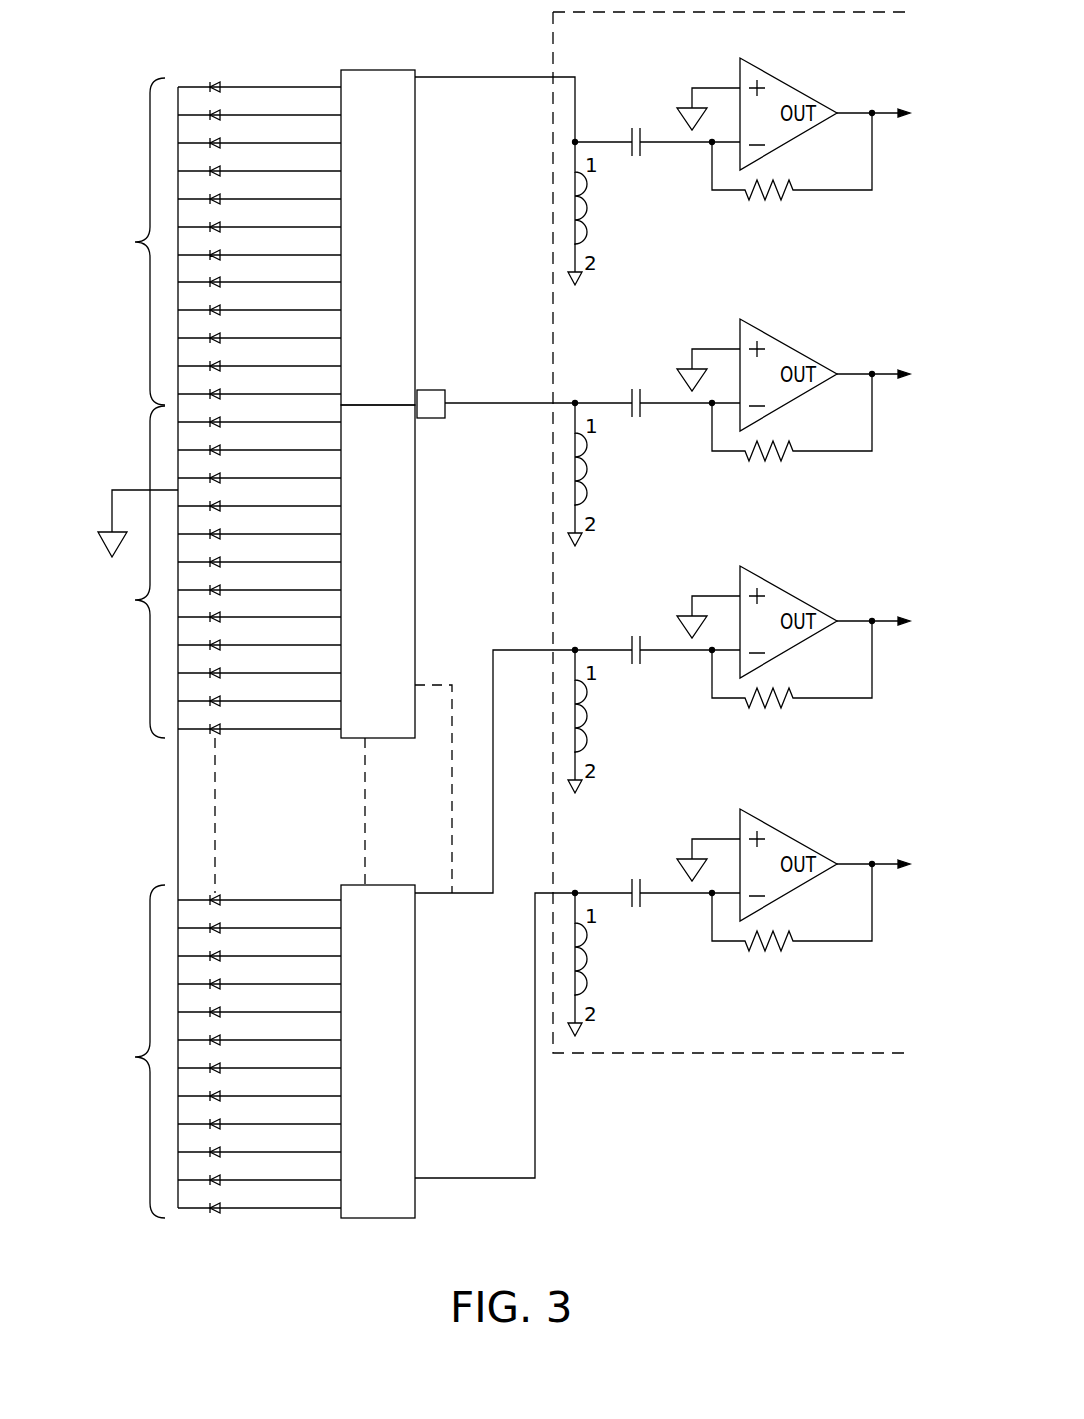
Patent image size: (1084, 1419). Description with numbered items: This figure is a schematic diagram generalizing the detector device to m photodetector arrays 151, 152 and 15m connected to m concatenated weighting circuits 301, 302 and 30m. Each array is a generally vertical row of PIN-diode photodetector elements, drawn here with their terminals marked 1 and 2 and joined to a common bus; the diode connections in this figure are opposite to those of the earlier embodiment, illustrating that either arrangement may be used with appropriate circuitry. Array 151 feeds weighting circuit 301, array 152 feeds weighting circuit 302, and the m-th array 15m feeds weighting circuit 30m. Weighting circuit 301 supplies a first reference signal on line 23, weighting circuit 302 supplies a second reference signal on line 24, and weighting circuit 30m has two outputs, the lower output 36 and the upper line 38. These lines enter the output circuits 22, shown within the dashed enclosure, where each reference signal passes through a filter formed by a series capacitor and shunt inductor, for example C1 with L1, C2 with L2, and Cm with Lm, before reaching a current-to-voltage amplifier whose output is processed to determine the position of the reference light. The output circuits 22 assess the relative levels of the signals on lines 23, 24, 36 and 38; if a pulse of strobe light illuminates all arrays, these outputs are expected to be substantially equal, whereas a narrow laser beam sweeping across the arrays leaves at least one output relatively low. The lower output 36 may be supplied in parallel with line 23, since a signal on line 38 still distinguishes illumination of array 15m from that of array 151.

The detector diode terminal 1 is at (259, 640).
The detector diode terminal 2 / common bus 2 is at (151, 638).
The photodetector array 151 is at (127, 241).
The photodetector array 152 is at (126, 572).
The photodetector array 15m is at (122, 1051).
The output circuits 22 is at (752, 1055).
The line 23 is at (517, 76).
The line 24 is at (512, 401).
The weighting circuit 301 is at (415, 243).
The weighting circuit 302 is at (415, 468).
The weighting circuit 30m is at (415, 1052).
The output 36 is at (535, 1128).
The line 38 is at (493, 752).
The capacitor C1 is at (739, 171).
The inductor L1 is at (596, 208).
The capacitor C2 is at (739, 432).
The inductor L2 is at (596, 469).
The capacitor Cm is at (739, 679).
The inductor Lm is at (600, 716).